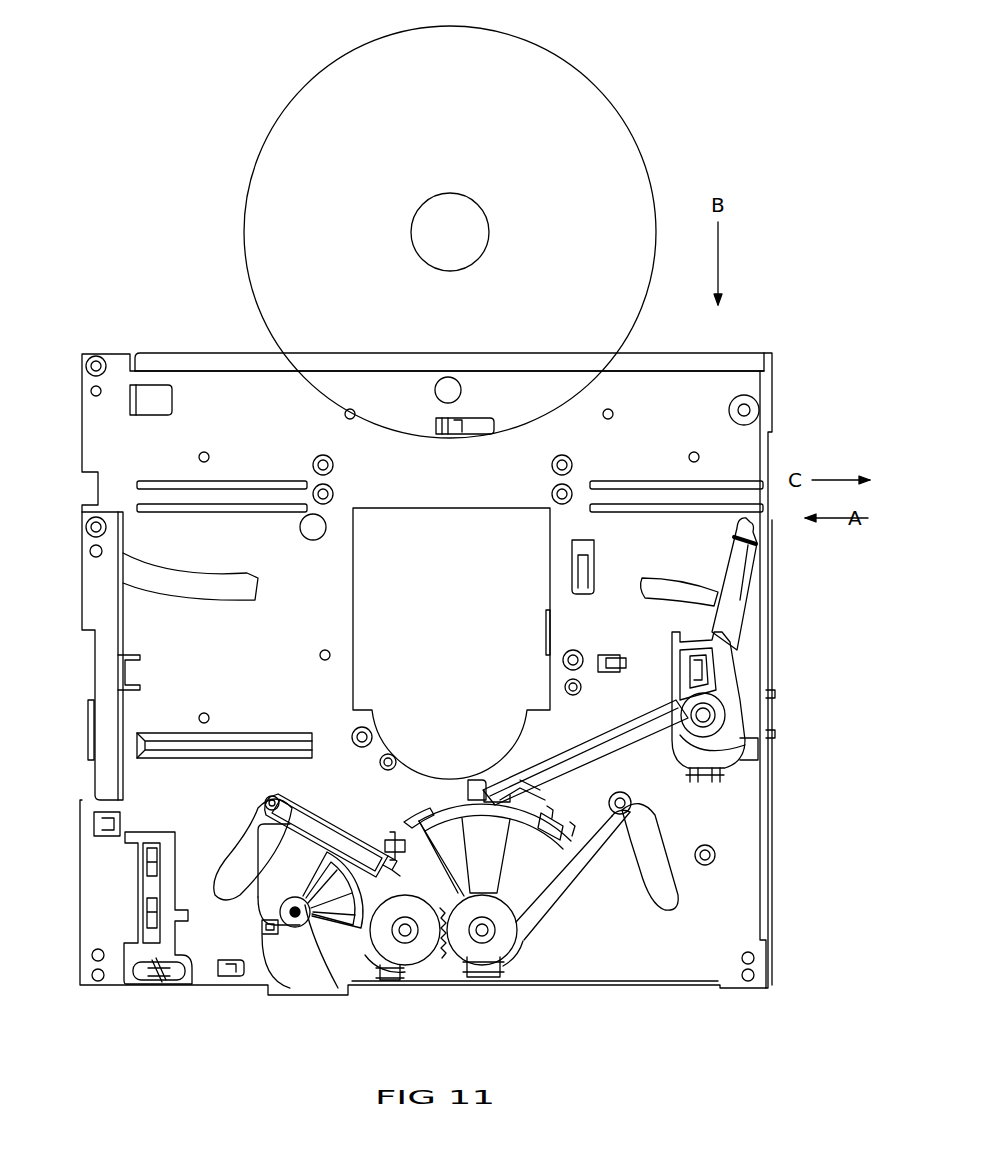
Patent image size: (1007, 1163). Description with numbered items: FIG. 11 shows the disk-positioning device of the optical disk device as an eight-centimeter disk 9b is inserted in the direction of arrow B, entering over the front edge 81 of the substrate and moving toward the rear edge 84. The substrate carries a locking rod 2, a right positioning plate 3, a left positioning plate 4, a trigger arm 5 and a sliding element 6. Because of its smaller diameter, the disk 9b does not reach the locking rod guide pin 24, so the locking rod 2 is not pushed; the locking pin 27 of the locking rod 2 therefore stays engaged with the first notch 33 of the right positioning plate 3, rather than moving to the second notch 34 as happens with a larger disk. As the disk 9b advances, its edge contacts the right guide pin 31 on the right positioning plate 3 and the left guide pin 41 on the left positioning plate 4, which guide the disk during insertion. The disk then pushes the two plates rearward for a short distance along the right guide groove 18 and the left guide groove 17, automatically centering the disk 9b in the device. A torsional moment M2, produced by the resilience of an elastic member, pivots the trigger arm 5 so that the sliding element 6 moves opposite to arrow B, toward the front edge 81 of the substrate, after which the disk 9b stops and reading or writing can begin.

The 8-cm disk 9b is at (602, 81).
The front edge 81 is at (180, 352).
The rear edge 84 is at (604, 988).
The locking rod 2 is at (736, 597).
The locking rod guide pin 24 is at (748, 550).
The locking pin 27 is at (492, 795).
The first notch 33 is at (482, 796).
The second notch 34 is at (420, 825).
The right positioning plate 3 is at (528, 868).
The right guide pin 31 is at (626, 796).
The left positioning plate 4 is at (328, 815).
The left guide pin 41 is at (275, 798).
The left guide groove 17 is at (243, 842).
The right guide groove 18 is at (655, 846).
The torsional moment M2 is at (310, 876).
The trigger arm 5 is at (270, 936).
The bracket 6 is at (138, 918).